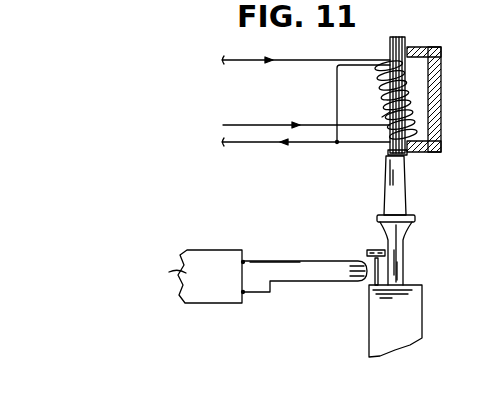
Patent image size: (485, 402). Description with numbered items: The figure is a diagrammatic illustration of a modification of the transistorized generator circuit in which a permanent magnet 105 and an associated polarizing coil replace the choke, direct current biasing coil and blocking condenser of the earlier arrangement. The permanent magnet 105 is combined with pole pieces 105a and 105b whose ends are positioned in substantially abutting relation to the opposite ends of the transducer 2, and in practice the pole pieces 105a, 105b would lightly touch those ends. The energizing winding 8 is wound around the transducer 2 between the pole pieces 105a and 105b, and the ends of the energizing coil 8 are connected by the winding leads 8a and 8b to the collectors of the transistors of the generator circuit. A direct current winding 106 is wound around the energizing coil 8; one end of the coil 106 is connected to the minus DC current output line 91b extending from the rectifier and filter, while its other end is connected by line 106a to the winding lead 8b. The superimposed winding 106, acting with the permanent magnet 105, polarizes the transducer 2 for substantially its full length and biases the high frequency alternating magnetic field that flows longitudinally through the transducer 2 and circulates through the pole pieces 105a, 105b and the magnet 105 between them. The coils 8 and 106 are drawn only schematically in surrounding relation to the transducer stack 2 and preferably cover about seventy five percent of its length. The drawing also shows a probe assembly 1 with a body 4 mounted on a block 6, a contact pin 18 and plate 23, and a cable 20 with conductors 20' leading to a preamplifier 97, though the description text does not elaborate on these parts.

The probe assembly 1 is at (412, 257).
The transducer 2 is at (399, 37).
The cylindrical body 4 is at (402, 196).
The support block 6 is at (416, 313).
The energizing winding 8 is at (382, 88).
The winding lead 8a is at (310, 58).
The winding lead 8b is at (311, 146).
The contact pin 18 is at (373, 279).
The cable 20 is at (305, 268).
The cable conductor 20' is at (287, 271).
The contact plate 23 is at (366, 251).
The minus DC current output line 91b is at (276, 125).
The preamplifier 97 is at (214, 250).
The permanent magnet 105 is at (446, 99).
The pole piece 105a is at (443, 52).
The pole piece 105b is at (445, 146).
The direct current winding 106 is at (382, 117).
The line 106a is at (337, 100).